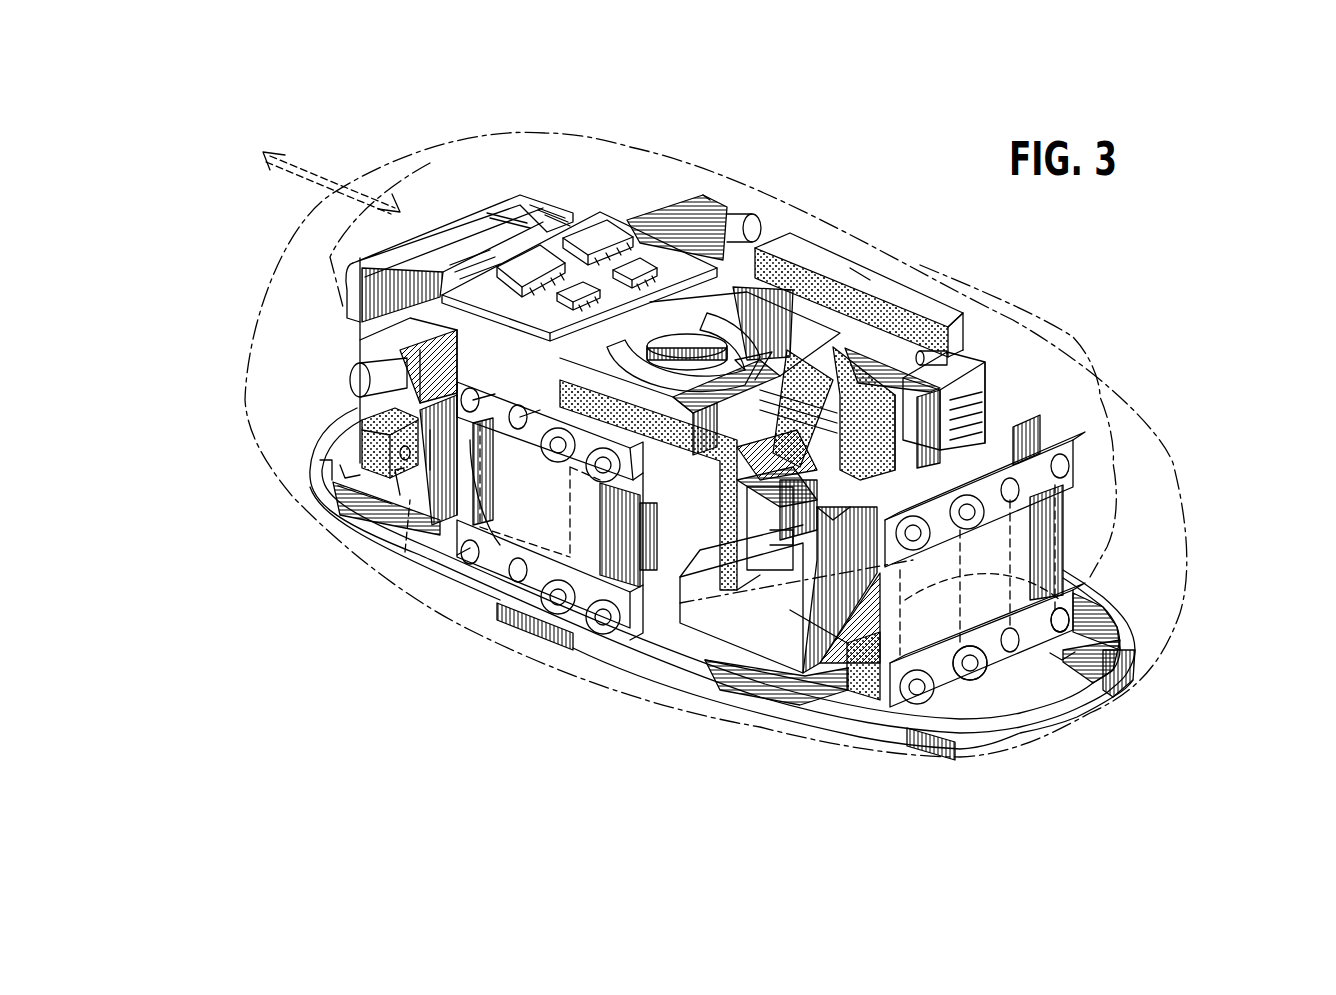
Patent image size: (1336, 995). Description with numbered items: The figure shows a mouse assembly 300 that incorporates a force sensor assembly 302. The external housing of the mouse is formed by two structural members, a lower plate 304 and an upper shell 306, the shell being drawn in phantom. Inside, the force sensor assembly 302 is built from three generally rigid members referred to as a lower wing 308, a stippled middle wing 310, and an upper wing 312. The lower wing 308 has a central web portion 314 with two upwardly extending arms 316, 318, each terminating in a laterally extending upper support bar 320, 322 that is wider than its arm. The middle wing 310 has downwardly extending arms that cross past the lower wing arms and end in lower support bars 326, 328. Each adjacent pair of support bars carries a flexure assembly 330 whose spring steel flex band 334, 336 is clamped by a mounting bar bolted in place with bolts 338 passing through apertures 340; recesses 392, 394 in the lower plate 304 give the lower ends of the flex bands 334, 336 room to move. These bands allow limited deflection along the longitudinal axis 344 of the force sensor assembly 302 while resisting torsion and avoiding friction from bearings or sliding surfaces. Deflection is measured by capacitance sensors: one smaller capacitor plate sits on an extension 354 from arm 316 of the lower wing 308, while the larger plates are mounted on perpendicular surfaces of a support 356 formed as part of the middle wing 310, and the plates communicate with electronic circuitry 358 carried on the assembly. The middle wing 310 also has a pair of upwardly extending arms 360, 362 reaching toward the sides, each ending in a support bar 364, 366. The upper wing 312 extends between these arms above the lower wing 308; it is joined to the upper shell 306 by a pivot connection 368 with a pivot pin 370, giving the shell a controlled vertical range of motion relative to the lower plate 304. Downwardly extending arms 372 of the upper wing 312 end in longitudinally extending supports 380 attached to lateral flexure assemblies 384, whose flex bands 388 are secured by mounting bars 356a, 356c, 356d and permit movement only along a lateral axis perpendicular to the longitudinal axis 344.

The mouse assembly 300 is at (1083, 350).
The force sensor assembly 302 is at (993, 410).
The lower plate 304 is at (1133, 650).
The upper shell 306 is at (1178, 452).
The lower wing 308 is at (790, 645).
The middle wing 310 is at (700, 630).
The upper wing 312 is at (727, 258).
The central web portion 314 is at (765, 660).
The upwardly extending arm 316 is at (832, 645).
The upwardly extending arm 318 is at (420, 478).
The upper support bar 320 is at (1060, 445).
The upper support bar 322 is at (1105, 525).
The lower support bar 326 is at (868, 690).
The lower support bar 328 is at (345, 442).
The flexure assembly 330 is at (1072, 575).
The flex band 334 is at (985, 598).
The flex band 336 is at (357, 405).
The bolts 338 is at (968, 672).
The apertures 340 is at (1073, 620).
The longitudinal axis 344 is at (302, 175).
The extension 354 is at (925, 395).
The support 356 is at (690, 555).
The mounting bar 356a is at (852, 268).
The mounting bar 356c is at (350, 377).
The mounting bar 356d is at (457, 560).
The electronic circuitry 358 is at (579, 195).
The upwardly extending arm 360 is at (592, 657).
The upwardly extending arm 362 is at (870, 315).
The support bar 364 is at (360, 335).
The support bar 366 is at (820, 268).
The pivot connection 368 is at (688, 195).
The pivot pin 370 is at (752, 226).
The downwardly extending arm 372 is at (405, 552).
The longitudinally extending support 380 is at (650, 612).
The lateral flexure assembly 384 is at (488, 565).
The flex band 388 is at (520, 535).
The recess 392 is at (1062, 658).
The recess 394 is at (337, 450).